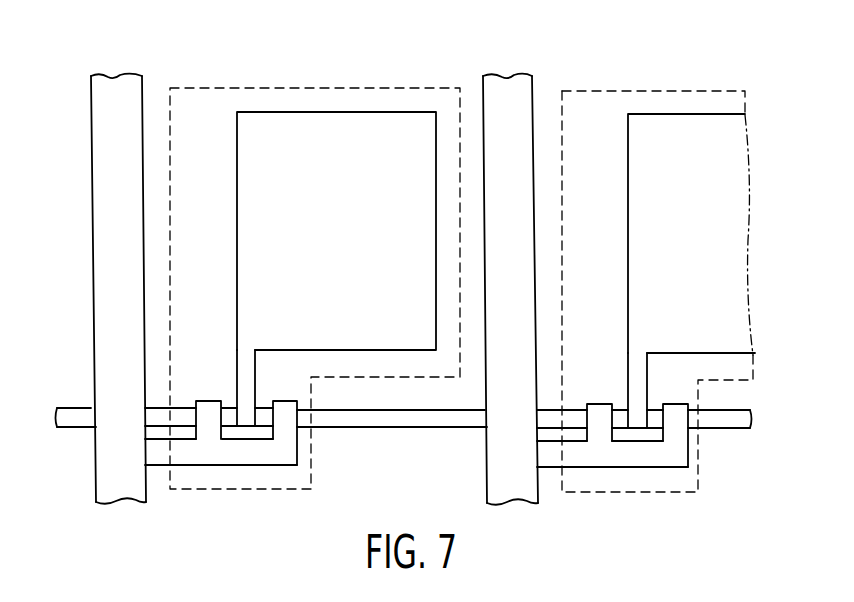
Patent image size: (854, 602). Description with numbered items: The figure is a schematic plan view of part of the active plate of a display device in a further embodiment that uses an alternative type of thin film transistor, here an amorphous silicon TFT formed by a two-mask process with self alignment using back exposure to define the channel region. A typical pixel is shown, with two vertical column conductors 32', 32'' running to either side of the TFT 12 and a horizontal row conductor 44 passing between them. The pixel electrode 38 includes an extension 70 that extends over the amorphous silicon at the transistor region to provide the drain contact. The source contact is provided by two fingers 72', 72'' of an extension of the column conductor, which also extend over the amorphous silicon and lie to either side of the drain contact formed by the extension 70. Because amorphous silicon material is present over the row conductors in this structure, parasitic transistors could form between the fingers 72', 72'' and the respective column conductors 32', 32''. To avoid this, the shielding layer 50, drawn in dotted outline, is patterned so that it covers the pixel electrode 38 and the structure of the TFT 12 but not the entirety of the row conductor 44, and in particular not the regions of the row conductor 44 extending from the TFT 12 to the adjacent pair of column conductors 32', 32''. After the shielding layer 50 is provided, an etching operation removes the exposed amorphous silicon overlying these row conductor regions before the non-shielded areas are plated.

The TFT 12 is at (283, 443).
The column conductor 32' is at (118, 265).
The column conductor 32'' is at (510, 266).
The pixel electrode 38 is at (292, 112).
The row conductor 44 is at (69, 408).
The shielding layer 50 is at (224, 88).
The extension 70 is at (237, 362).
The finger 72' is at (402, 397).
The finger 72'' is at (478, 410).